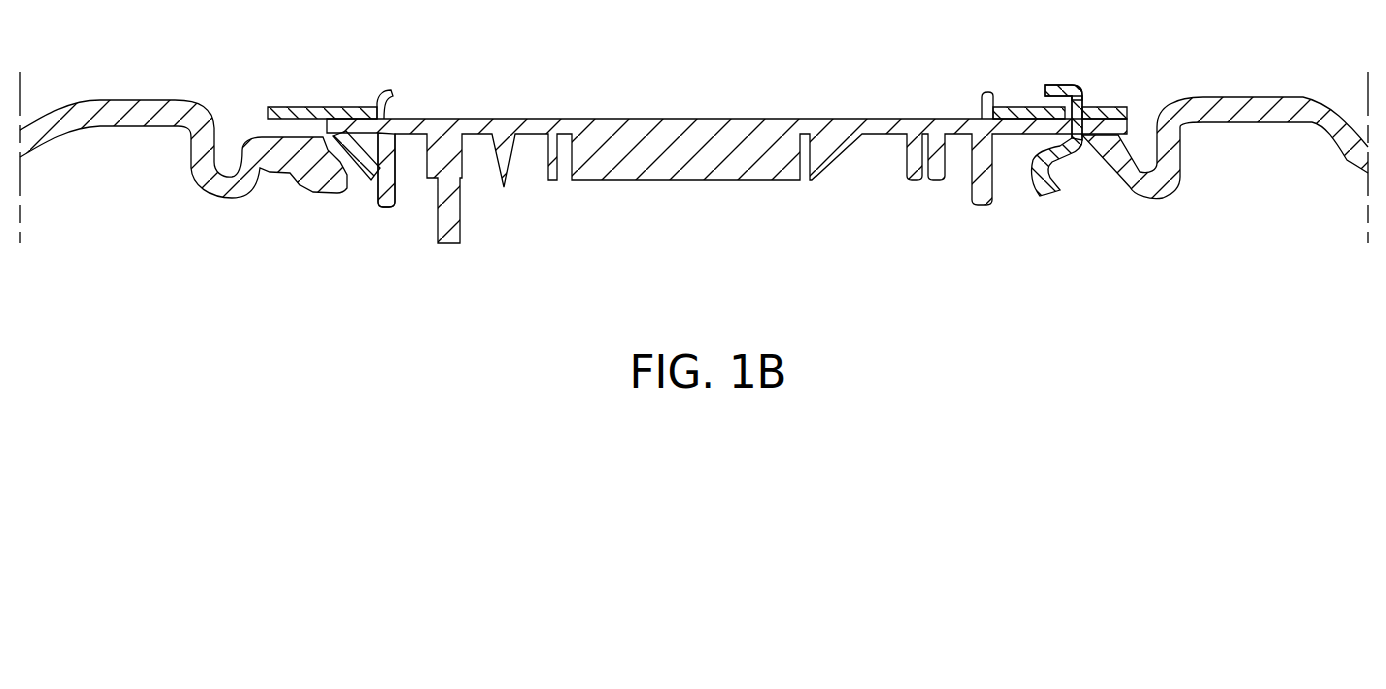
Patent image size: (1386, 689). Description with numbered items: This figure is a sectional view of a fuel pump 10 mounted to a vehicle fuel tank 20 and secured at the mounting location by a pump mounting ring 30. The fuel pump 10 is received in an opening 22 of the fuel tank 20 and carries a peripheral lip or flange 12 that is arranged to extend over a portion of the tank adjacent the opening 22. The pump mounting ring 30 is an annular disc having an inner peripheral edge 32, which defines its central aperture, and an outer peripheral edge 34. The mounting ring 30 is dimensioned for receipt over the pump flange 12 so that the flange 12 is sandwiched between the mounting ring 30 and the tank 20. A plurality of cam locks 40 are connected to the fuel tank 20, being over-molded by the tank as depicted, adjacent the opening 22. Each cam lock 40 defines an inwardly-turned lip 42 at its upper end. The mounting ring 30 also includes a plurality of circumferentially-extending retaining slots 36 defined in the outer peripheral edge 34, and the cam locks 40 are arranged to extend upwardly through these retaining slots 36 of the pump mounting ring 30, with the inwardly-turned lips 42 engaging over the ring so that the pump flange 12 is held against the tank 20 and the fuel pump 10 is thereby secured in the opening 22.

The fuel pump 10 is at (637, 118).
The peripheral lip or flange 12 is at (318, 118).
The vehicle fuel tank 20 is at (1263, 96).
The opening 22 is at (394, 160).
The pump mounting ring 30 is at (283, 106).
The inner peripheral edge 32 is at (985, 93).
The outer peripheral edge 34 is at (1128, 109).
The retaining slots 36 is at (1075, 103).
The cam locks 40 is at (1060, 88).
The inwardly-turned lip 42 is at (1050, 91).